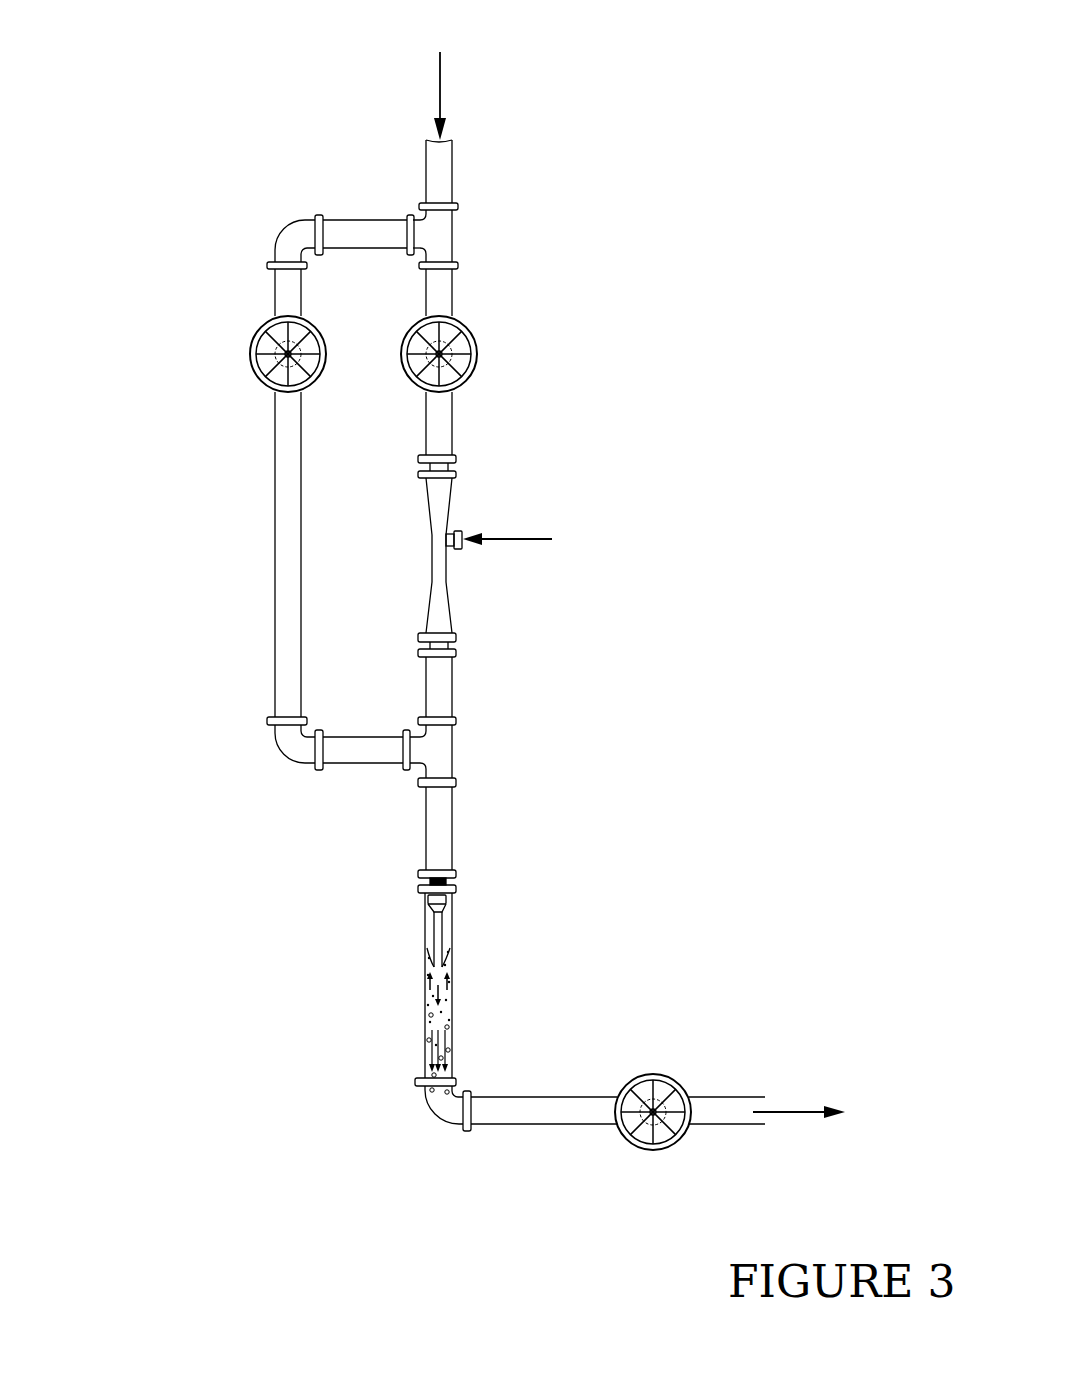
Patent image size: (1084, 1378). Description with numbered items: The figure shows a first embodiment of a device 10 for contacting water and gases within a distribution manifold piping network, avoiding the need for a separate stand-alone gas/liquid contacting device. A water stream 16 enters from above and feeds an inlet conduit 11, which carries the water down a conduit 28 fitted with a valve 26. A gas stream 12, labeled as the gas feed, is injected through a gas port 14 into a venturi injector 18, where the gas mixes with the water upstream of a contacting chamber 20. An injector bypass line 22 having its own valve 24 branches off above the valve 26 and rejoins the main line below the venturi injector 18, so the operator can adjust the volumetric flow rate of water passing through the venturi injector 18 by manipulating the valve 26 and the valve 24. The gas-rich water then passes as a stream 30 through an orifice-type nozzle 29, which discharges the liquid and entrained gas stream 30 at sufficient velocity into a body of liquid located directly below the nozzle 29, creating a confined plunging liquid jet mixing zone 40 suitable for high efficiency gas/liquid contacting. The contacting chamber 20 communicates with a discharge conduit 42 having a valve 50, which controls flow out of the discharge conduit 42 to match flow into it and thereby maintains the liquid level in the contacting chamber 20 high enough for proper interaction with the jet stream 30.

The device 10 is at (715, 211).
The inlet conduit 11 is at (452, 175).
The gas stream 12 is at (522, 539).
The gas port 14 is at (461, 530).
The water stream 16 is at (450, 90).
The venturi injector 18 is at (447, 597).
The contacting chamber 20 is at (452, 1003).
The injector bypass line 22 is at (273, 585).
The valve 24 is at (248, 352).
The valve 26 is at (478, 354).
The conduit 28 is at (452, 297).
The orifice-type nozzle 29 is at (452, 903).
The stream 30 is at (443, 940).
The confined plunging liquid jet mixing zone 40 is at (423, 1012).
The discharge conduit 42 is at (542, 1125).
The valve 50 is at (682, 1080).